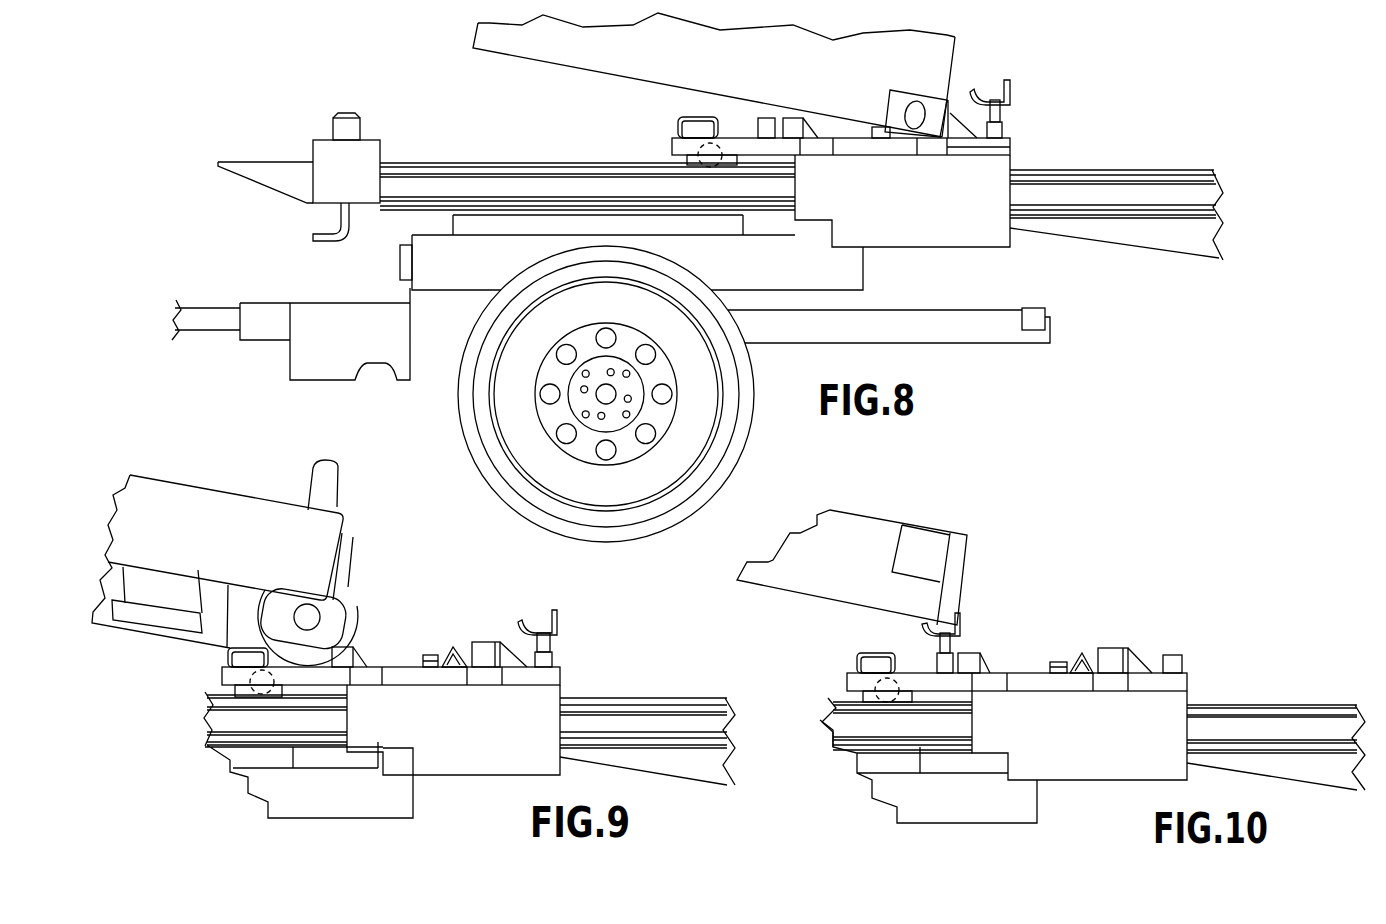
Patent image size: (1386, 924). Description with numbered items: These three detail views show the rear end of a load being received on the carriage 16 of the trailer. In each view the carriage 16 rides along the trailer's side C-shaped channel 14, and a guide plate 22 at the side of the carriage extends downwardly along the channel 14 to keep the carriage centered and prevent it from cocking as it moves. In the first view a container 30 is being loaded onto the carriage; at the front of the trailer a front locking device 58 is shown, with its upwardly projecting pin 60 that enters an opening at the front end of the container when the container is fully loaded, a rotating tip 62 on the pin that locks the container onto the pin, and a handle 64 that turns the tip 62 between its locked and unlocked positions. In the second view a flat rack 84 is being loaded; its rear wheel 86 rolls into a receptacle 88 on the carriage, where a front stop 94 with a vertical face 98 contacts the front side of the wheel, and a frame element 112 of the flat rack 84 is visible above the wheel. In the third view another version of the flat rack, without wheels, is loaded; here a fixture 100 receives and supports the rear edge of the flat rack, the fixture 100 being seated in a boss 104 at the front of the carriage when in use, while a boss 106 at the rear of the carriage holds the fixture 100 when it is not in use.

In FIG. 8, the C-shaped channel 14 is at (1167, 190).
In FIG. 9, the C-shaped channel 14 is at (686, 720).
In FIG. 10, the C-shaped channel 14 is at (1318, 725).
In FIG. 8, the carriage 16 is at (1018, 156).
In FIG. 9, the carriage 16 is at (568, 686).
In FIG. 10, the carriage 16 is at (1198, 689).
In FIG. 8, the guide plate 22 is at (928, 240).
In FIG. 9, the guide plate 22 is at (480, 767).
In FIG. 10, the guide plate 22 is at (1107, 772).
In FIG. 8, the container 30 is at (548, 67).
In FIG. 8, the front locking device 58 is at (317, 154).
In FIG. 8, the pin 60 is at (361, 132).
In FIG. 8, the rotating tip 62 is at (343, 117).
In FIG. 8, the handle 64 is at (322, 247).
In FIG. 9, the flat rack 84 is at (259, 538).
In FIG. 9, the wheel 86 is at (360, 613).
In FIG. 8, the receptacle 88 is at (746, 119).
In FIG. 8, the front stop 94 is at (674, 120).
In FIG. 9, the front stop 94 is at (223, 656).
In FIG. 8, the vertical face 98 is at (727, 127).
In FIG. 8, the fixture 100 is at (1016, 87).
In FIG. 9, the fixture 100 is at (564, 614).
In FIG. 10, the fixture 100 is at (971, 617).
In FIG. 10, the boss 104 is at (935, 662).
In FIG. 8, the boss 106 is at (1004, 127).
In FIG. 9, the boss 106 is at (555, 660).
In FIG. 10, the boss 106 is at (1172, 655).
In FIG. 9, the frame element 112 is at (230, 600).